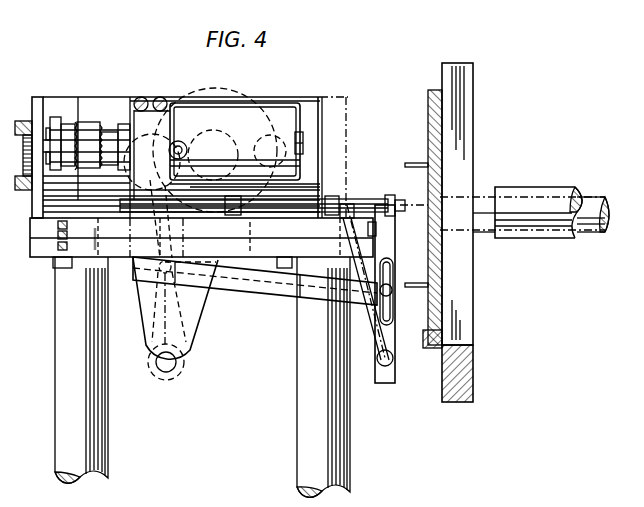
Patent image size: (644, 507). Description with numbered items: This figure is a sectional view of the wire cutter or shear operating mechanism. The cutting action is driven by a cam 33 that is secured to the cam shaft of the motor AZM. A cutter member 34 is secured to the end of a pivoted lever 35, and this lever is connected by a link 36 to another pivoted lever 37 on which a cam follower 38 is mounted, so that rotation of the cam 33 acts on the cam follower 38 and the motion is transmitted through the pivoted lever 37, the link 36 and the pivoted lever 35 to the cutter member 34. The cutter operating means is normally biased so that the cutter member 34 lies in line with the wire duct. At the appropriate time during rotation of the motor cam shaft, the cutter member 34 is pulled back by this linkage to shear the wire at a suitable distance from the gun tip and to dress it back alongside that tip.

The cam 33 is at (238, 136).
The cutter member 34 is at (393, 213).
The pivoted lever 35 is at (396, 340).
The link 36 is at (268, 292).
The pivoted lever 37 is at (203, 307).
The cam follower 38 is at (200, 136).